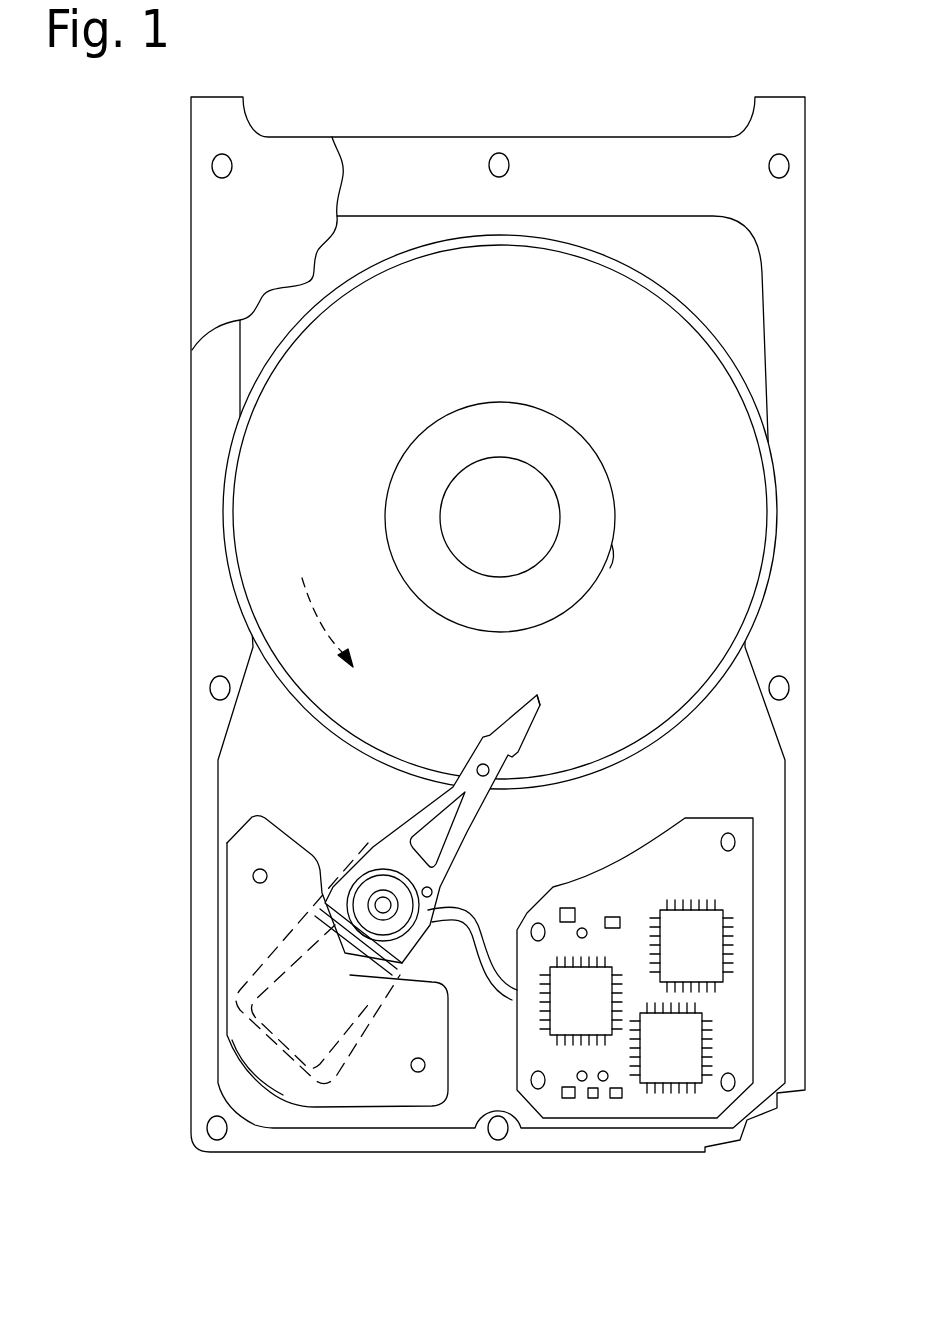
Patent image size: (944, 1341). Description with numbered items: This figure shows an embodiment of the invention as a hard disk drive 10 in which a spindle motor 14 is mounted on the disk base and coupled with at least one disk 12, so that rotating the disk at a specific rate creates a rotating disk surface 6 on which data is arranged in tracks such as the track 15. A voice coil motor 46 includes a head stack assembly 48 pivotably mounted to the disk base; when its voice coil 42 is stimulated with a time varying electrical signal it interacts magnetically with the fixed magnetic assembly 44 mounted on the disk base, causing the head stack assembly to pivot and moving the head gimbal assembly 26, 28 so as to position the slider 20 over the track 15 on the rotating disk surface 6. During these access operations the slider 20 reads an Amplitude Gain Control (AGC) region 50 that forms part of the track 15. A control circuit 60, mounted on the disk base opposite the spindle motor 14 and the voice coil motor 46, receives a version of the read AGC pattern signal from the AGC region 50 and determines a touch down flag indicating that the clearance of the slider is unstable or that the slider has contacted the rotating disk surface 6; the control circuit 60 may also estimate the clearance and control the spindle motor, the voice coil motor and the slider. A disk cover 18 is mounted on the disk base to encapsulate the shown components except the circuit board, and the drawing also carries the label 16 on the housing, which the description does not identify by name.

The hard disk drive 10 is at (499, 600).
The disk 12 is at (538, 512).
The rotating disk surface 6 is at (500, 512).
The spindle motor 14 is at (500, 517).
The track 15 is at (617, 517).
The housing base 16 is at (780, 327).
The disk cover 18 is at (232, 230).
The slider 20 is at (585, 682).
The head gimbal assembly 26 is at (537, 693).
The head gimbal assembly 28 is at (481, 811).
The voice coil 42 is at (284, 1003).
The fixed magnetic assembly 44 is at (387, 1085).
The voice coil motor 46 is at (257, 1003).
The head stack assembly 48 is at (440, 887).
The Amplitude Gain Control (AGC) region 50 is at (614, 549).
The control circuit 60 is at (777, 1108).